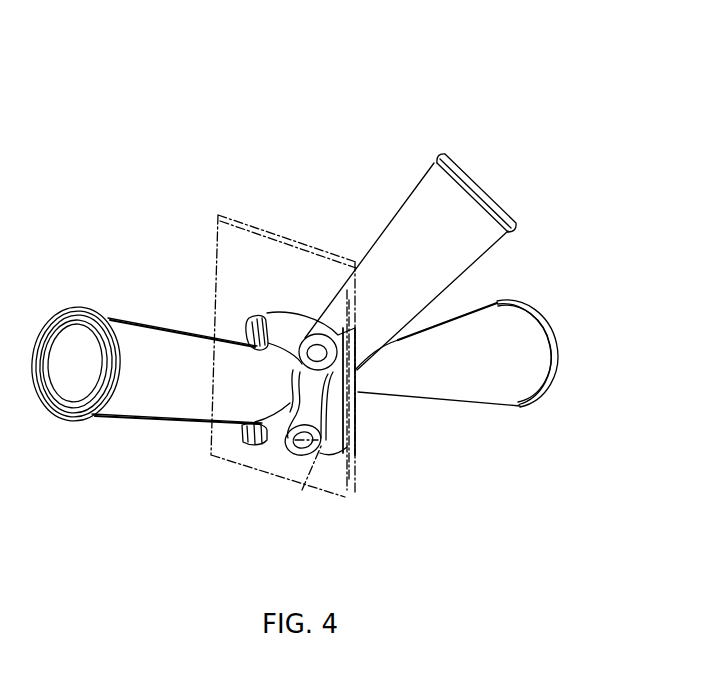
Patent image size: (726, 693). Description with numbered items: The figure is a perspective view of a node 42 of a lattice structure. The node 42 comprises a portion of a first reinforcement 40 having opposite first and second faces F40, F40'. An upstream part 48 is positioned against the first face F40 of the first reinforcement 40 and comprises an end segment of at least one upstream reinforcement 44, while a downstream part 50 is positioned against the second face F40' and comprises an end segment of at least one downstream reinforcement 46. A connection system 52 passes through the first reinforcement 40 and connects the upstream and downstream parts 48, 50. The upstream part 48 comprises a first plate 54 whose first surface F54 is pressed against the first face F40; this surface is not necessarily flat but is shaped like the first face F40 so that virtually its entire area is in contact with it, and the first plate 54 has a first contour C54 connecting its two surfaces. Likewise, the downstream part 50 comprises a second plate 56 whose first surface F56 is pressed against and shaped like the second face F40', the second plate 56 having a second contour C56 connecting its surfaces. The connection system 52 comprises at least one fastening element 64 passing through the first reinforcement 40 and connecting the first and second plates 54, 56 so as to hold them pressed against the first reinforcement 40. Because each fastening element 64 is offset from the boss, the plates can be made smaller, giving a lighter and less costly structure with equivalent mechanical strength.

The first reinforcement 40 is at (264, 208).
The node 42 is at (142, 200).
The upstream reinforcement 44 is at (137, 402).
The downstream reinforcement 46 is at (488, 196).
The upstream part 48 is at (138, 274).
The downstream part 50 is at (395, 178).
The connection system 52 is at (246, 320).
The first plate 54 is at (258, 300).
The second plate 56 is at (318, 293).
The fastening element 64 is at (278, 348).
The first face F40 is at (264, 338).
The second face F40' is at (288, 331).
The first surface of the first plate F54 is at (357, 385).
The first surface of the second plate F56 is at (354, 391).
The first contour C54 is at (296, 481).
The second contour C56 is at (360, 432).